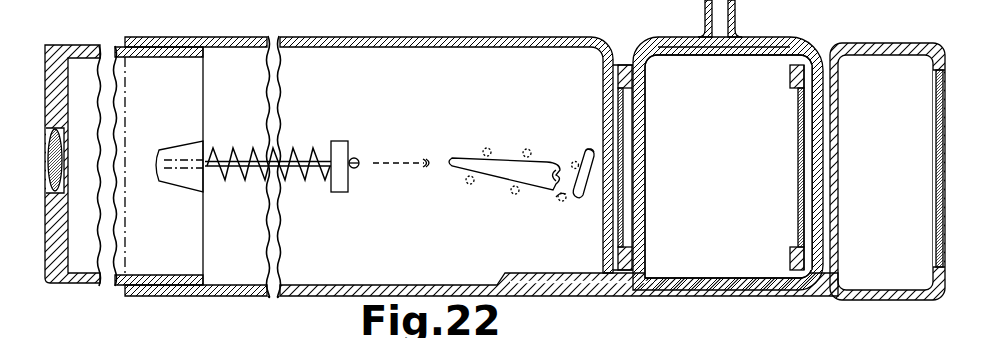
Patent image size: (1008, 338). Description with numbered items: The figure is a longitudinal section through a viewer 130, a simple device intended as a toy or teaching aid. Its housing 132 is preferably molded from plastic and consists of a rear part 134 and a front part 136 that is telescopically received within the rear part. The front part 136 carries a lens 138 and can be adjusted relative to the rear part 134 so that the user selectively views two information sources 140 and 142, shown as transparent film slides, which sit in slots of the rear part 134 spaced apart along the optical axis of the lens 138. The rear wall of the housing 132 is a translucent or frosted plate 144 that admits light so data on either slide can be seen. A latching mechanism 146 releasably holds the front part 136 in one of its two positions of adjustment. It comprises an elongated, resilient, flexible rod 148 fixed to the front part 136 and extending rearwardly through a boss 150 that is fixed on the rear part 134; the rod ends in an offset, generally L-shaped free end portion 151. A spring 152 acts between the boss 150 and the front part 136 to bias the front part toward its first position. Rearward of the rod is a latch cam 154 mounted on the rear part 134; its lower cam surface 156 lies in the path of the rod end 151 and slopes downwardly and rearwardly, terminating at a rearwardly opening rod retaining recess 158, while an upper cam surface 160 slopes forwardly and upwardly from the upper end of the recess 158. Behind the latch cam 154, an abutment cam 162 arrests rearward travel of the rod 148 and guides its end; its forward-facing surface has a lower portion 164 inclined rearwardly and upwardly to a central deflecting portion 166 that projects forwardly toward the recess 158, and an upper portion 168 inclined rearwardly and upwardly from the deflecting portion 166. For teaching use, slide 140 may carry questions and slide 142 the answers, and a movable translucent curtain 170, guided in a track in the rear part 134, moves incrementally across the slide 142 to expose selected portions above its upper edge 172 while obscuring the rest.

The viewer 130 is at (490, 22).
The housing 132 is at (320, 35).
The rear part 134 is at (162, 37).
The front part 136 is at (78, 45).
The lens 138 is at (63, 160).
The information source 140 is at (620, 158).
The information source 142 is at (823, 133).
The translucent plate 144 is at (938, 180).
The latching mechanism 146 is at (307, 143).
The rod 148 is at (324, 182).
The boss 150 is at (343, 141).
The free end portion 151 is at (360, 160).
The spring 152 is at (240, 178).
The latch cam 154 is at (495, 168).
The lower cam surface 156 is at (522, 188).
The rod retaining recess 158 is at (548, 160).
The upper cam surface 160 is at (508, 157).
The abutment cam 162 is at (582, 200).
The lower portion 164 is at (560, 200).
The deflecting portion 166 is at (574, 160).
The cam surface upper portion 168 is at (590, 150).
The curtain 170 is at (798, 155).
The upper edge 172 is at (800, 79).